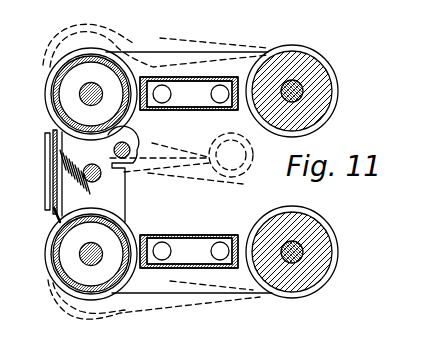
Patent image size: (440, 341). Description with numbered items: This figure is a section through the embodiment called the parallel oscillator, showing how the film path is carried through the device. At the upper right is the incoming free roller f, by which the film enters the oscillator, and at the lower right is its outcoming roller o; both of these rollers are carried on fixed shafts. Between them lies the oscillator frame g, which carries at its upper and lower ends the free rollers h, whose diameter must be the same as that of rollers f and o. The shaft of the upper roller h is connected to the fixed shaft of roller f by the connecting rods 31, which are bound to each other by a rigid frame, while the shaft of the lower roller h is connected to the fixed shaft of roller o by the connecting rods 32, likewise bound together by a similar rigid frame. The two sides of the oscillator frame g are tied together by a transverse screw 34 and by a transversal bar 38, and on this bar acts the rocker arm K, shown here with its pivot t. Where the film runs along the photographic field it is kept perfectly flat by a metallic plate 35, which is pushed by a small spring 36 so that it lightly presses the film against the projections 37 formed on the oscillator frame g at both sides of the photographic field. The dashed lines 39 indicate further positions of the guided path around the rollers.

The connecting rods 31 is at (189, 93).
The connecting rods 32 is at (189, 251).
The transverse screw 34 is at (107, 153).
The metallic plate 35 is at (45, 153).
The small spring 36 is at (80, 179).
The projections 37 is at (53, 190).
The transversal bar 38 is at (189, 172).
The belt / dashed guide line 39 is at (173, 53).
The free rollers h is at (91, 174).
The incoming free roller f is at (294, 76).
The outcoming roller o is at (298, 252).
The oscillator frame g is at (100, 174).
The pivot t is at (231, 155).
The rocker arm K is at (176, 168).